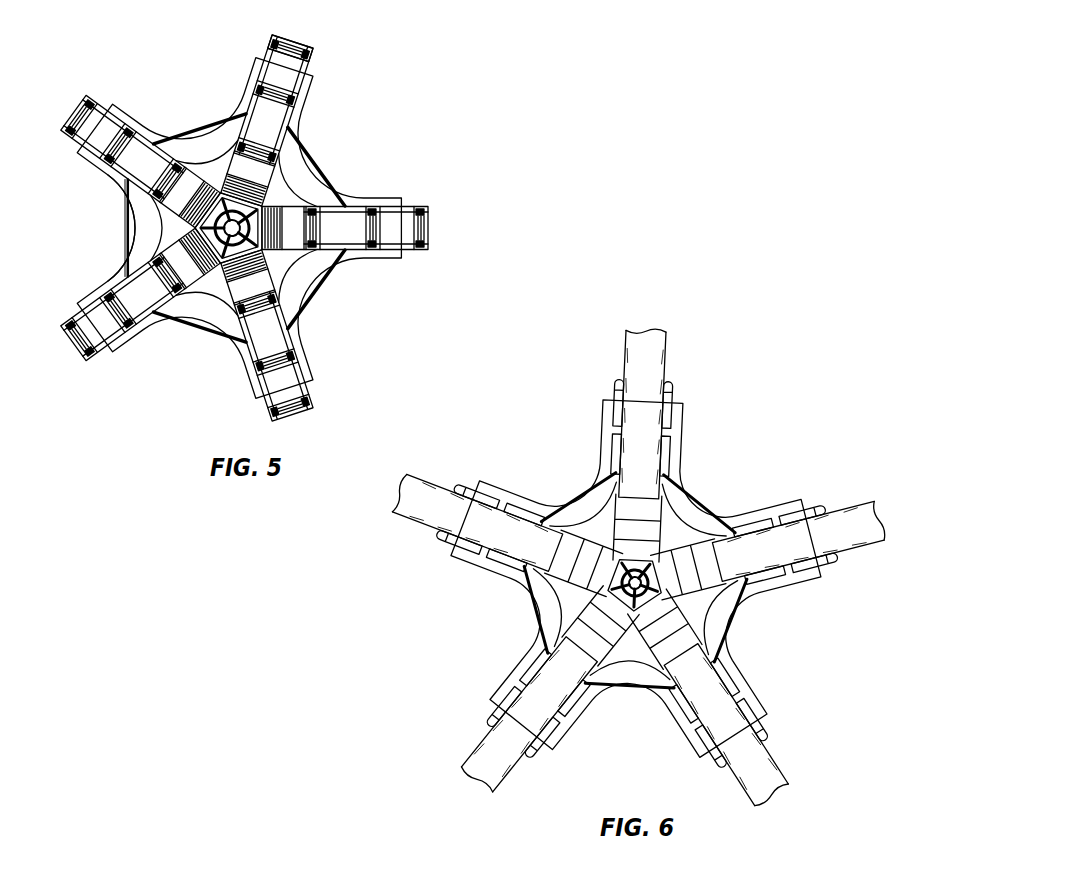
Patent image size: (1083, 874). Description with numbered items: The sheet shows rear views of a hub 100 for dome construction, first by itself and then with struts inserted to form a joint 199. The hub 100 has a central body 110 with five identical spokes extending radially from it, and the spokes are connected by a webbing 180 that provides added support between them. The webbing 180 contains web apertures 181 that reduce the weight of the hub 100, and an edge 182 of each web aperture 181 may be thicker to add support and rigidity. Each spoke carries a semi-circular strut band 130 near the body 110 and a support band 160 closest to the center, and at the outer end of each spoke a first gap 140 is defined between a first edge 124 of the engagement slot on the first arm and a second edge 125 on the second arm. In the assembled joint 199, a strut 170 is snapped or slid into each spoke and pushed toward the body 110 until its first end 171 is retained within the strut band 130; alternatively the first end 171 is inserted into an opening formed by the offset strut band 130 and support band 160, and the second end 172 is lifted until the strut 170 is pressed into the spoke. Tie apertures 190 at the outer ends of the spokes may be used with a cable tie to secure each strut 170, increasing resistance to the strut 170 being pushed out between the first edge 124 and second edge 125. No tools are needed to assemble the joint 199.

In FIG. 5, the hub 100 is at (385, 77).
In FIG. 6, the hub 100 is at (740, 634).
In FIG. 6, the body 110 is at (560, 638).
In FIG. 5, the first edge 124 is at (256, 106).
In FIG. 5, the second edge 125 is at (316, 78).
In FIG. 5, the strut band 130 is at (239, 168).
In FIG. 6, the strut band 130 is at (652, 642).
In FIG. 5, the first gap 140 is at (288, 58).
In FIG. 5, the support band 160 is at (412, 226).
In FIG. 6, the strut 170 is at (846, 555).
In FIG. 6, the first end 171 is at (680, 548).
In FIG. 6, the second end 172 is at (866, 520).
In FIG. 5, the webbing 180 is at (108, 184).
In FIG. 5, the web aperture 181 is at (138, 210).
In FIG. 5, the edge 182 is at (126, 268).
In FIG. 6, the tie aperture 190 is at (611, 405).
In FIG. 6, the joint 199 is at (788, 389).